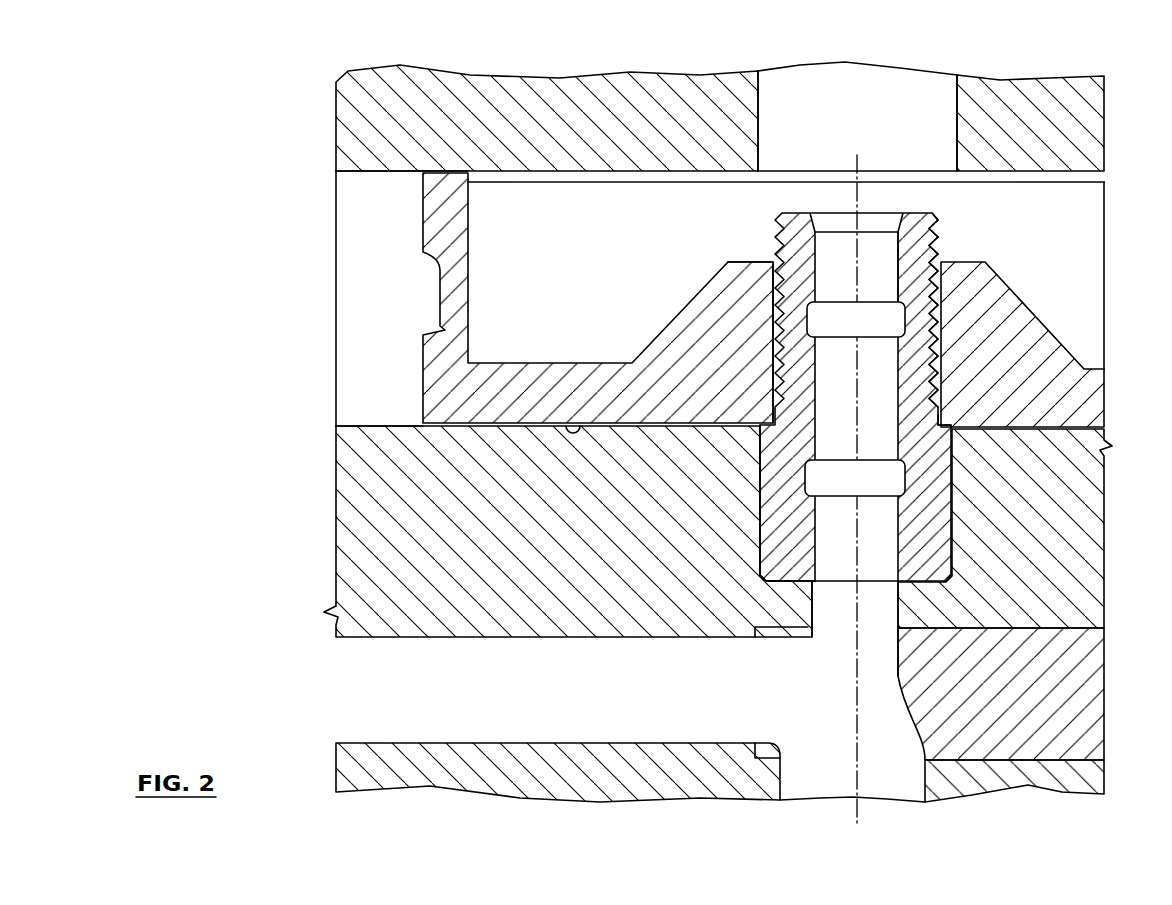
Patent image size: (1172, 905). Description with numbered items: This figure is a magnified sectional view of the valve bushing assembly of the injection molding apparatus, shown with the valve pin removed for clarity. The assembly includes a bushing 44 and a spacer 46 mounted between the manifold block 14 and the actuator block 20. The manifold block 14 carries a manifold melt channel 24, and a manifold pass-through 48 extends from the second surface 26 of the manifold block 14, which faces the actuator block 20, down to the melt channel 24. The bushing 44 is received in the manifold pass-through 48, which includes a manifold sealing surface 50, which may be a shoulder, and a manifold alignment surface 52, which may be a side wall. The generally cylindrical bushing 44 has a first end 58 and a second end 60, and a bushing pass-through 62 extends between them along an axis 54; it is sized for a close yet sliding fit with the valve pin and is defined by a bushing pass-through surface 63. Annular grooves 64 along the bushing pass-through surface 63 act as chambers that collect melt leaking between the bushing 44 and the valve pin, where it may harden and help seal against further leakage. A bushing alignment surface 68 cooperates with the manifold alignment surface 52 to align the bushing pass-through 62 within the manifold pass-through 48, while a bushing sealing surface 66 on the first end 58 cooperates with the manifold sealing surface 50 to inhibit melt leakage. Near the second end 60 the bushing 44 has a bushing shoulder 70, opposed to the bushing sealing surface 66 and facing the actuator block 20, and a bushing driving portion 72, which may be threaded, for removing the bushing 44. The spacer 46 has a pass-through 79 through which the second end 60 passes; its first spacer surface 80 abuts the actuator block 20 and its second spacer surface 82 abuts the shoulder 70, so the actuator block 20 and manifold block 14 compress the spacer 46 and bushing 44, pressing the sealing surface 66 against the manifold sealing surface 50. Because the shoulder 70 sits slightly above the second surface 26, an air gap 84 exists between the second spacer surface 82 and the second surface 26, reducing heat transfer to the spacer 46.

The actuator block 20 is at (336, 118).
The axis 54 is at (857, 168).
The first spacer surface 80 is at (447, 170).
The second surface 26 is at (337, 420).
The spacer 46 is at (447, 330).
The bushing alignment surface 68 is at (771, 423).
The second spacer surface 82 is at (562, 420).
The air gap 84 is at (420, 424).
The manifold block 14 is at (345, 456).
The bushing 44 is at (773, 580).
The manifold melt channel 24 is at (468, 708).
The second end 60 is at (785, 212).
The bushing pass-through surface 63 is at (897, 253).
The annular grooves 64 is at (815, 322).
The bushing shoulder 70 is at (760, 470).
The bushing pass-through 62 is at (885, 283).
The bushing driving portion 72 is at (940, 247).
The spacer pass-through 79 is at (917, 441).
The manifold pass-through 48 is at (938, 407).
The manifold alignment surface 52 is at (957, 470).
The manifold sealing surface 50 is at (945, 568).
The first end 58 is at (807, 575).
The bushing sealing surface 66 is at (815, 605).